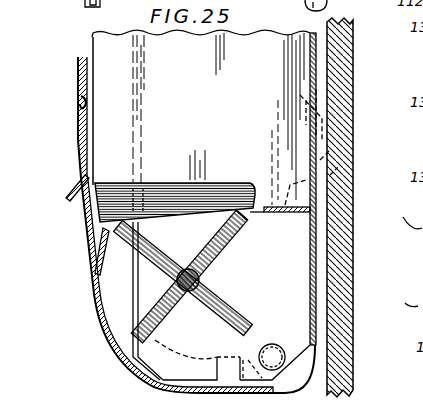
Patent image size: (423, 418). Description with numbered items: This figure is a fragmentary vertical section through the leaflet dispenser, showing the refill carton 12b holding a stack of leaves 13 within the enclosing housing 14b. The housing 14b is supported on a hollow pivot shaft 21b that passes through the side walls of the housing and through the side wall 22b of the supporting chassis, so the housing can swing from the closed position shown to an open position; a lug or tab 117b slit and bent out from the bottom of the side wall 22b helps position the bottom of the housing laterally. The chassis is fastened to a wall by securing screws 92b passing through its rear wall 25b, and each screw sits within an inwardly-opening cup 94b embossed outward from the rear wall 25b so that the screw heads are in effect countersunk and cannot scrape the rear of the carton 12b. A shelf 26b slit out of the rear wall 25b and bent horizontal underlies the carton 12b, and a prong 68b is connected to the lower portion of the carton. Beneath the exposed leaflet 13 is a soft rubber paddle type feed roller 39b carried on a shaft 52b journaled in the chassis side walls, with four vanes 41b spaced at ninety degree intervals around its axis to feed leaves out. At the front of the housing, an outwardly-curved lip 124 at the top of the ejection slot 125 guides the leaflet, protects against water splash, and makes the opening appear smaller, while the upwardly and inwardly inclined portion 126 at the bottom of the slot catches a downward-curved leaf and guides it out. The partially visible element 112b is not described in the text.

The refill carton 12b is at (93, 49).
The leaves 13 is at (143, 212).
The housing 14b is at (171, 225).
The pivot shaft 21b is at (279, 362).
The side wall of chassis 22b is at (218, 119).
The rear wall of chassis 25b is at (310, 64).
The shelf 26b is at (274, 212).
The feed roller 39b is at (210, 248).
The vanes 41b is at (193, 228).
The shaft 52b is at (200, 282).
The prong 68b is at (337, 172).
The securing screws 92b is at (345, 93).
The cups 94b is at (295, 108).
The bracket 112b is at (318, 10).
The tab 117b is at (84, 5).
The outwardly-curved lip 124 is at (72, 203).
The ejection slot 125 is at (88, 213).
The inclined portion 126 is at (92, 240).